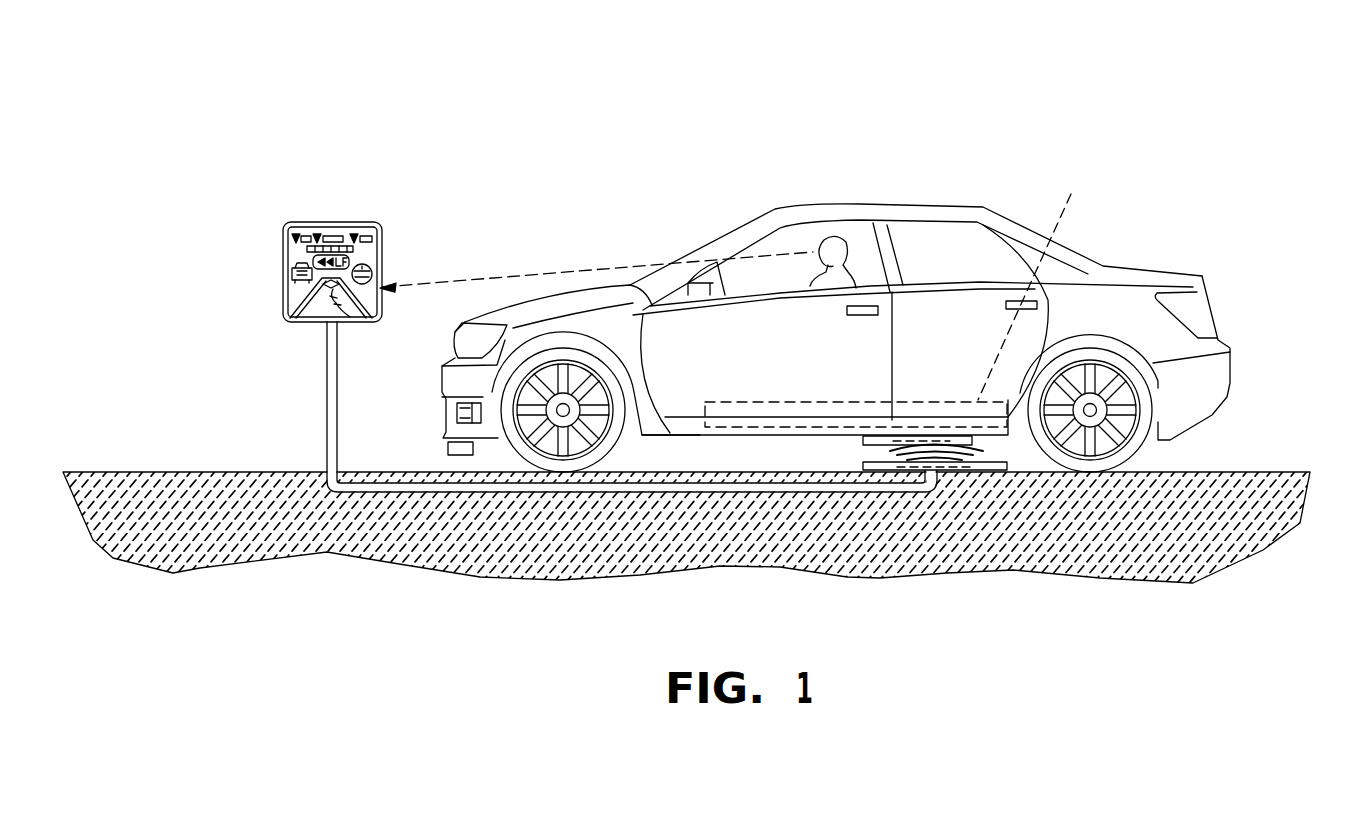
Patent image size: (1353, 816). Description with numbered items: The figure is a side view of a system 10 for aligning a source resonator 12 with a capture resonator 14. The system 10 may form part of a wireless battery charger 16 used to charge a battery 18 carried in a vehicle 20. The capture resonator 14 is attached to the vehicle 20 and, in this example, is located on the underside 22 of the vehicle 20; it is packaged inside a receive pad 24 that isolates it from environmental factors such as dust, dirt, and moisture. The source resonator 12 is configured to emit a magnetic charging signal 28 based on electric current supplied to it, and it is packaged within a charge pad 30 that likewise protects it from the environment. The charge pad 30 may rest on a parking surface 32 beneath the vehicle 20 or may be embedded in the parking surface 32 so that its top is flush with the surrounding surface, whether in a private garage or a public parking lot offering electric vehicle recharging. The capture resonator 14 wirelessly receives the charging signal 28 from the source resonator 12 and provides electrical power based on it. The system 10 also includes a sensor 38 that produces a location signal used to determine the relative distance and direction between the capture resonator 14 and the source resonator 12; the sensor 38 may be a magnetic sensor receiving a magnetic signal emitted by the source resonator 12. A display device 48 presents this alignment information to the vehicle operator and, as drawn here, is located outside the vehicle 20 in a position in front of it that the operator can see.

The system 10 is at (958, 128).
The source resonator 12 is at (928, 471).
The capture resonator 14 is at (882, 449).
The wireless battery charger 16 is at (283, 281).
The battery 18 is at (1033, 284).
The vehicle 20 is at (1012, 220).
The underside 22 is at (675, 437).
The receive pad 24 is at (1010, 430).
The magnetic charging signal 28 is at (952, 457).
The charge pad 30 is at (881, 468).
The parking surface 32 is at (1275, 470).
The sensor 38 is at (453, 455).
The display device 48 is at (368, 252).